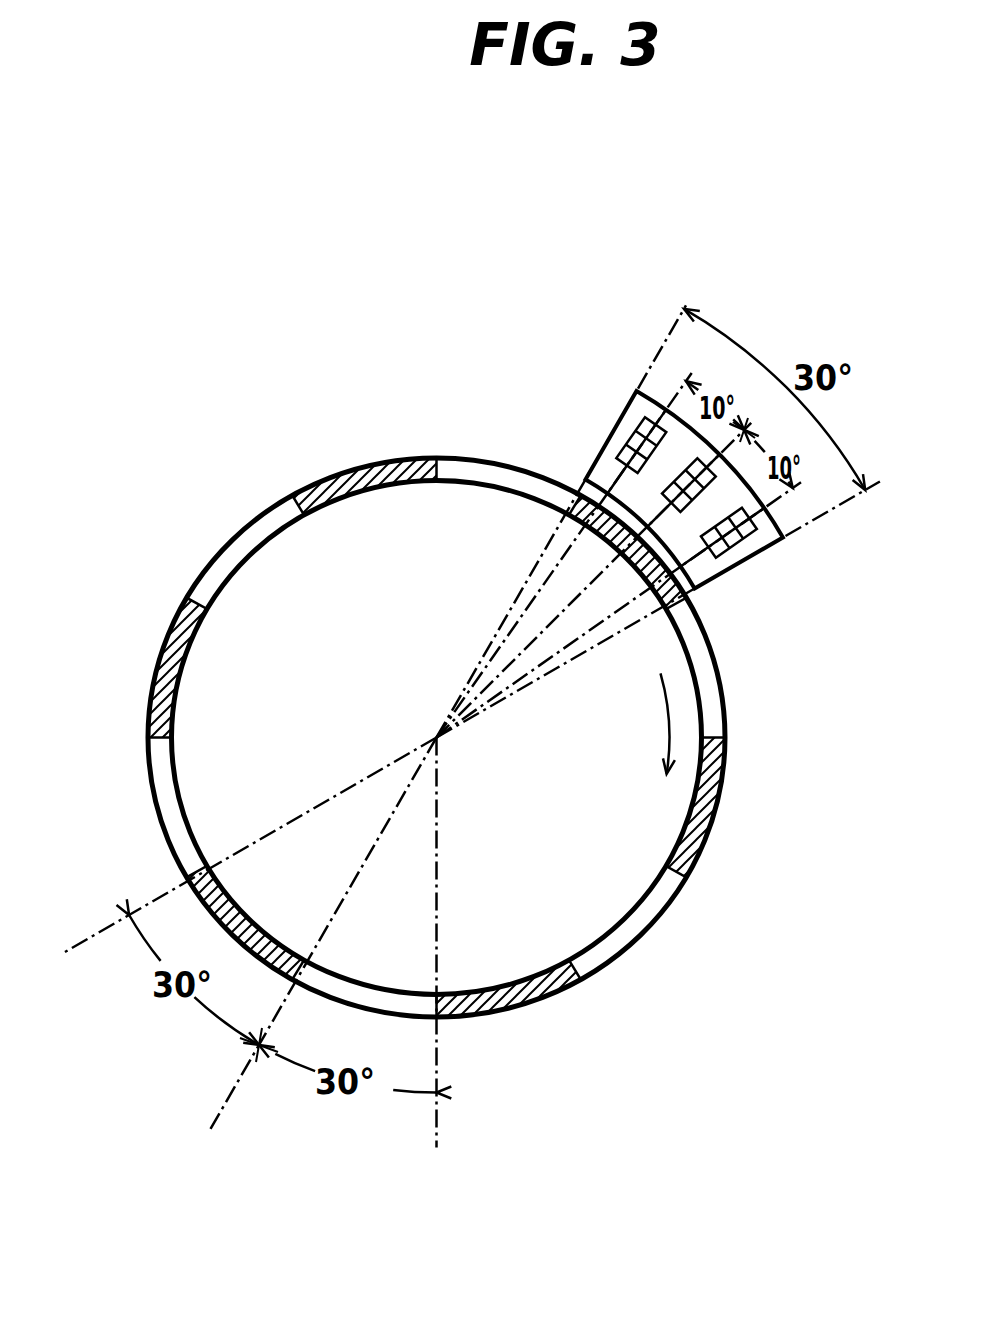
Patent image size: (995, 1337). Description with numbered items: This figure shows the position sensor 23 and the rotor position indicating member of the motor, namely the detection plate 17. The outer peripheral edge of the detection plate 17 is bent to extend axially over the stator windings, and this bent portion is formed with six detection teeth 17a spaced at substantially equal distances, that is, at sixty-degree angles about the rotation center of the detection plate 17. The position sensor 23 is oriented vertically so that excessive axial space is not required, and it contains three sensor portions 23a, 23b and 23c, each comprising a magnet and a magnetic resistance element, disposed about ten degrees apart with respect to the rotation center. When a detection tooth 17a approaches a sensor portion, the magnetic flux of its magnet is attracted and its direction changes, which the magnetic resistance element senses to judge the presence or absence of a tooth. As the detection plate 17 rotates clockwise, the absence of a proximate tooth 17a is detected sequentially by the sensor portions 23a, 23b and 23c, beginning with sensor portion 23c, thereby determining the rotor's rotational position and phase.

The detection plate 17 is at (262, 463).
The detection teeth 17a is at (197, 900).
The position sensor 23 is at (770, 562).
The sensor portion 23a is at (632, 414).
The sensor portion 23b is at (736, 550).
The sensor portion 23c is at (773, 530).